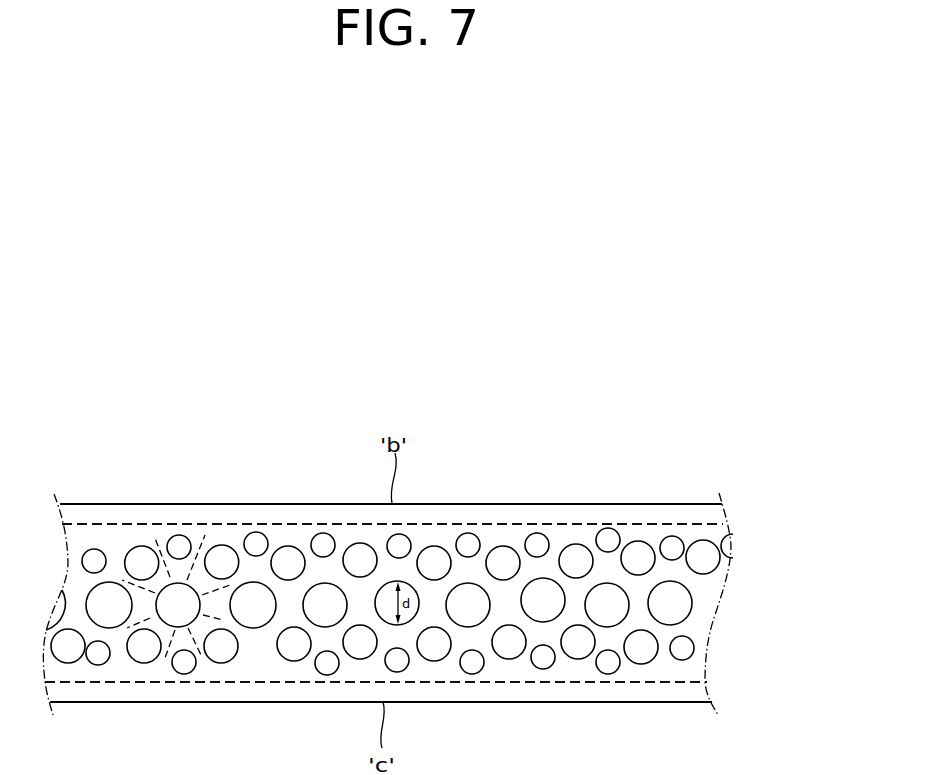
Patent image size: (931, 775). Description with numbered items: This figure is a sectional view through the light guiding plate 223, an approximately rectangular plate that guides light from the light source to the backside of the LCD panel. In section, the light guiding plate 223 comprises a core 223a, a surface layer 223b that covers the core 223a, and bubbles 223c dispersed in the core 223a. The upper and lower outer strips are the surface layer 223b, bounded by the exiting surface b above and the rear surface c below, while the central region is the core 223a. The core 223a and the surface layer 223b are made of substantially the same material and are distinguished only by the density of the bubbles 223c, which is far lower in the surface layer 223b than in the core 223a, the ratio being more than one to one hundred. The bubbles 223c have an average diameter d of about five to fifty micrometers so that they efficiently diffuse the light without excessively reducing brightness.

The light guiding plate 223 is at (706, 361).
The core 223a is at (718, 580).
The surface layer 223b is at (722, 512).
The bubbles 223c is at (686, 603).